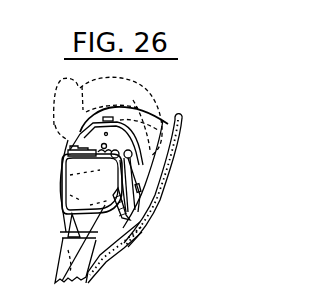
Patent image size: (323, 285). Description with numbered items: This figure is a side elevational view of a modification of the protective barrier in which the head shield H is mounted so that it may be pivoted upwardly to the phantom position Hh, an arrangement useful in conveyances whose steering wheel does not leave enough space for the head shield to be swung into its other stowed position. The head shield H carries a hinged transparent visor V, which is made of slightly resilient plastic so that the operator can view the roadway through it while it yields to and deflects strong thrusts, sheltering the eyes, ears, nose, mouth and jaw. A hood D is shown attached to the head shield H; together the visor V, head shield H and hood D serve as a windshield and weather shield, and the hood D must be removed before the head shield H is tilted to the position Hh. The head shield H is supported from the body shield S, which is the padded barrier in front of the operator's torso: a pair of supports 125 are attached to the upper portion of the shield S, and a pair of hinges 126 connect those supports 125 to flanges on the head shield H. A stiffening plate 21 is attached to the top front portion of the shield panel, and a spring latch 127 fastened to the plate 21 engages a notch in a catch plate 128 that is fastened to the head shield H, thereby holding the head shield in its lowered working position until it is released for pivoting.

The upwardly pivoted position of head shield Hh is at (138, 80).
The head shield H is at (74, 137).
The visor V is at (53, 175).
The hinges 126 is at (131, 156).
The hood D is at (166, 188).
The supports 125 is at (121, 200).
The catch plate 128 is at (73, 226).
The spring latch 127 is at (75, 238).
The stiffening plate 21 is at (63, 252).
The shield S is at (108, 262).